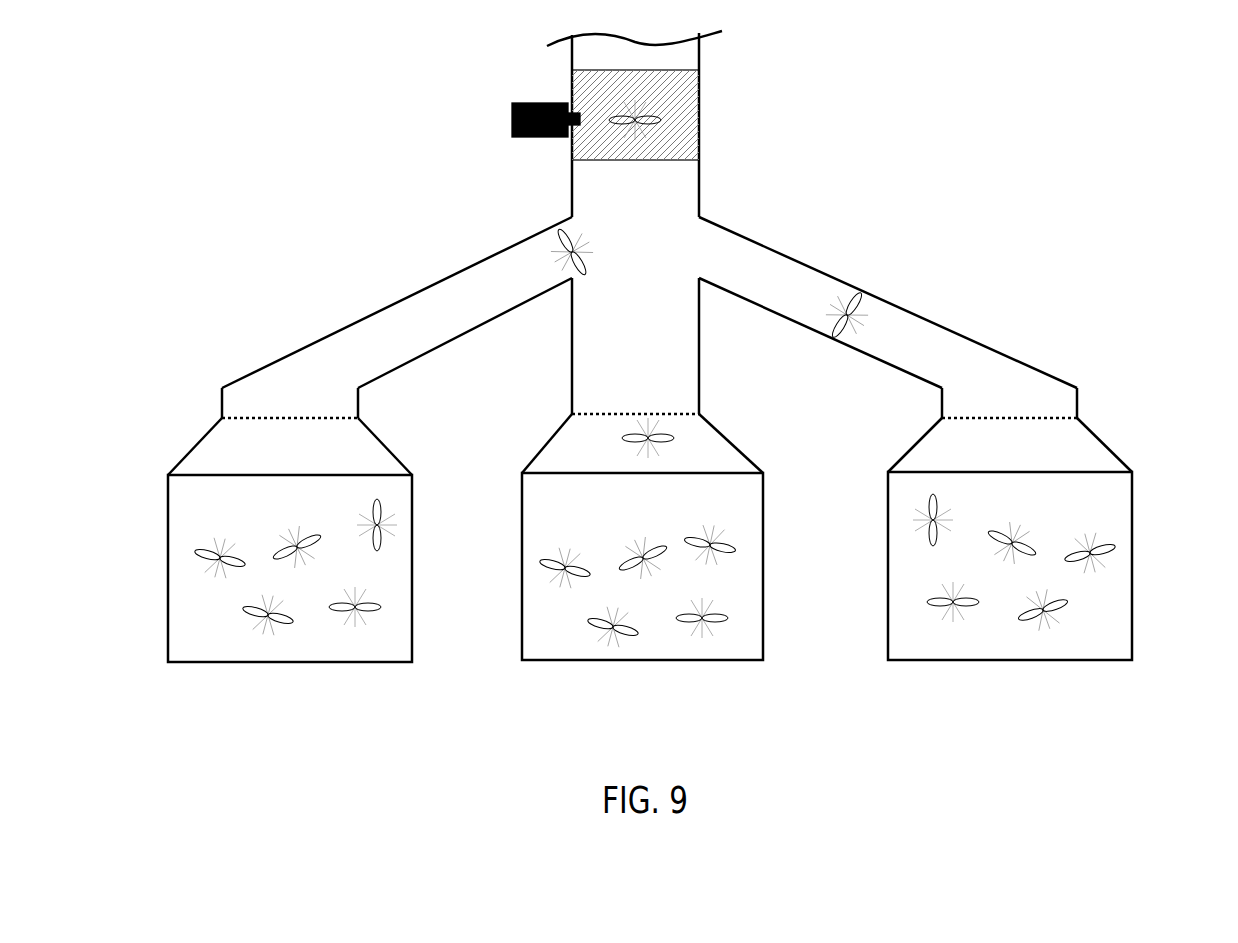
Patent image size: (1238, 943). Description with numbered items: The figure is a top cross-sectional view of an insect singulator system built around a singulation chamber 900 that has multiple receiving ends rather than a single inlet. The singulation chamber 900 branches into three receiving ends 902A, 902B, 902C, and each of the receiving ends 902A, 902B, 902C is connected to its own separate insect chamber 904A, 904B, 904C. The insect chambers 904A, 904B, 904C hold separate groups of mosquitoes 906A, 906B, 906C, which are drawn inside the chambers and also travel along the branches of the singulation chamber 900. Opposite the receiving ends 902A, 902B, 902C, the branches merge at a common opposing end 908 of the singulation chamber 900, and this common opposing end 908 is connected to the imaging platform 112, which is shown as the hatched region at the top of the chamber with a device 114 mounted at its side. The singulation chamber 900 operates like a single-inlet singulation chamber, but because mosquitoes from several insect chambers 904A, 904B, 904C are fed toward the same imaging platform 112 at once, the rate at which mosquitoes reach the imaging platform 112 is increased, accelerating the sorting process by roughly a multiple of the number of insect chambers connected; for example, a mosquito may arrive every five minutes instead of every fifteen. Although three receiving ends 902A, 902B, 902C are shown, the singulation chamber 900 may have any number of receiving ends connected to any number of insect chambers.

The singulation chamber 900 is at (890, 258).
The common opposing end 908 is at (707, 175).
The imaging platform 112 is at (699, 88).
The sensor 114 is at (512, 122).
The receiving end 902A is at (381, 440).
The receiving end 902B is at (722, 433).
The receiving end 902C is at (1093, 437).
The insect chamber 904A is at (290, 663).
The insect chamber 904B is at (641, 661).
The insect chamber 904C is at (1010, 661).
The group of mosquitoes 906A is at (375, 568).
The group of mosquitoes 906B is at (753, 577).
The group of mosquitoes 906C is at (1100, 600).